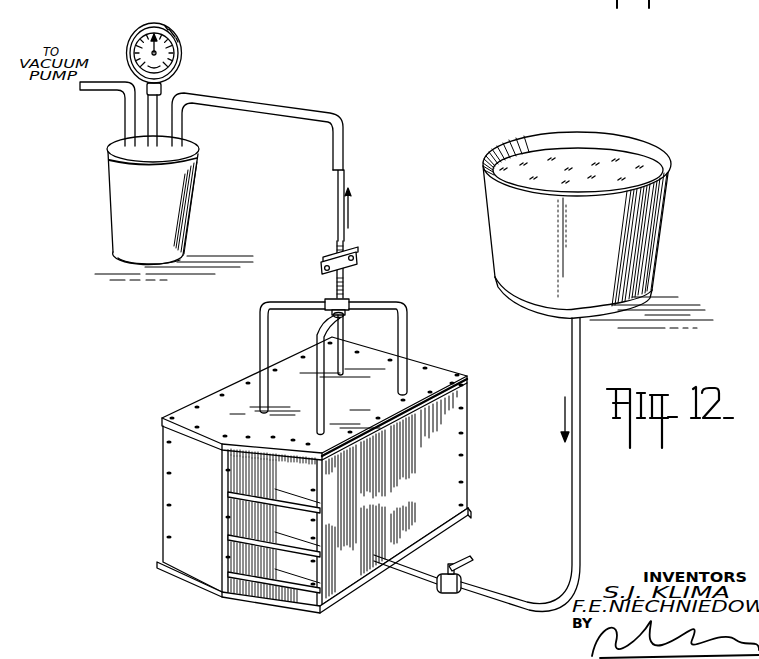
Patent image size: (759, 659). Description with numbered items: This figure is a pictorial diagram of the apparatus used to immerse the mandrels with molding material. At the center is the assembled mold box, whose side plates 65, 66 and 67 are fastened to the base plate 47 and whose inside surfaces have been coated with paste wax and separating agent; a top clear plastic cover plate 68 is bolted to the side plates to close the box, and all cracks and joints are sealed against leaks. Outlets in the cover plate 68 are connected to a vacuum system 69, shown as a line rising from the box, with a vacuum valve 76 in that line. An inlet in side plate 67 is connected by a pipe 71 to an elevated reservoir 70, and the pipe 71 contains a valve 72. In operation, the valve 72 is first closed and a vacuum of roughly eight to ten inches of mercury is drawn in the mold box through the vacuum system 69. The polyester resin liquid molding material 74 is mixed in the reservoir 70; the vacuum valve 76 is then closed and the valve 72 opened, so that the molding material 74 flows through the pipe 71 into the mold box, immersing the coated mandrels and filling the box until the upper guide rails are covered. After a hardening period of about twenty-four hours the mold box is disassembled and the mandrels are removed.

The base plate 47 is at (327, 605).
The side plate 65 is at (198, 555).
The side plate 66 is at (252, 563).
The side plate 67 is at (353, 566).
The top clear plastic cover plate 68 is at (203, 398).
The vacuum system 69 is at (305, 105).
The reservoir 70 is at (603, 212).
The pipe 71 is at (578, 493).
The valve 72 is at (447, 595).
The polyester resin liquid molding material 74 is at (606, 160).
The vacuum valve 76 is at (358, 266).